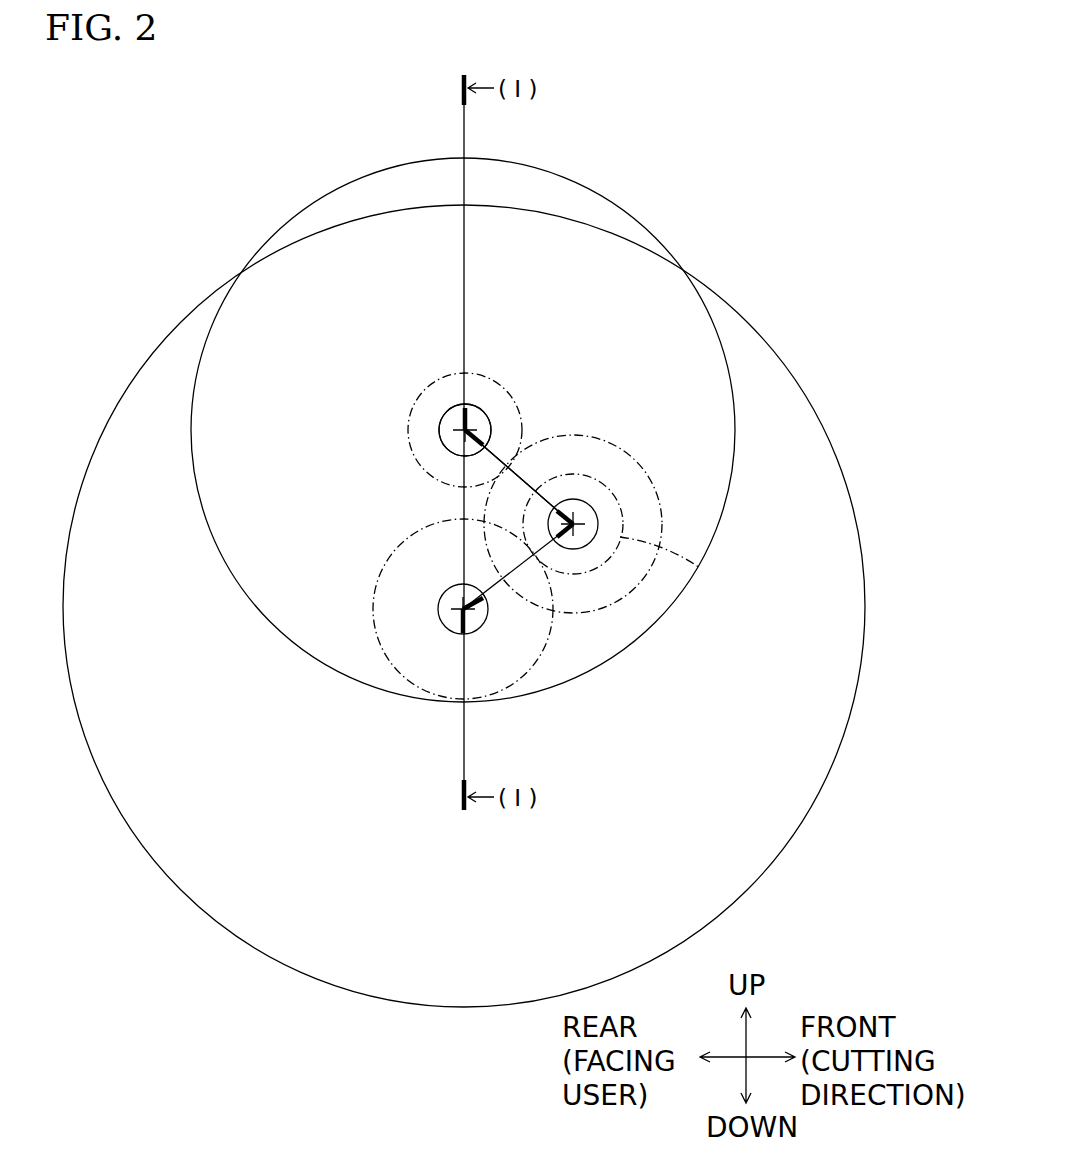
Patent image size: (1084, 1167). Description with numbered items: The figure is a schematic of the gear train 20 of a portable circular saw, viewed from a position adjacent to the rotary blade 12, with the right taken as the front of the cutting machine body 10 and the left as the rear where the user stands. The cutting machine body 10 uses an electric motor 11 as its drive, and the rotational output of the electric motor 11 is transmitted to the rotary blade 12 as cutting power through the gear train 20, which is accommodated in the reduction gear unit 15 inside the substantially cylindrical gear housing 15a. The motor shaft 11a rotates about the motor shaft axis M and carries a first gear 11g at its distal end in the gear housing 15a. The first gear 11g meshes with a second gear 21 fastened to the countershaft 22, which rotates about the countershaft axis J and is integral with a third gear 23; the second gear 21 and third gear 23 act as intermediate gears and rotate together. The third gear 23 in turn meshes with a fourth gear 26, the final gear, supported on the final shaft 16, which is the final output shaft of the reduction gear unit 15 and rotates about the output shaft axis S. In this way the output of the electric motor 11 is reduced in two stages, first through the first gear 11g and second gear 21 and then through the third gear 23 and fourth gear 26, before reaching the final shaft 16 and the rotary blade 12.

The cutting machine body 10 is at (690, 175).
The rotary blade 12 is at (149, 366).
The gear housing 15a is at (355, 182).
The motor shaft 11a is at (447, 410).
The electric motor 11 is at (465, 430).
The first gear 11g is at (413, 405).
The gear train 20 is at (559, 397).
The reduction gear unit 15 is at (519, 477).
The second gear 21 is at (638, 467).
The countershaft 22 is at (583, 498).
The third gear 23 is at (700, 568).
The final shaft 16 is at (488, 612).
The fourth gear 26 is at (380, 650).
The motor shaft axis M is at (466, 428).
The countershaft axis J is at (578, 530).
The output shaft axis S is at (485, 621).